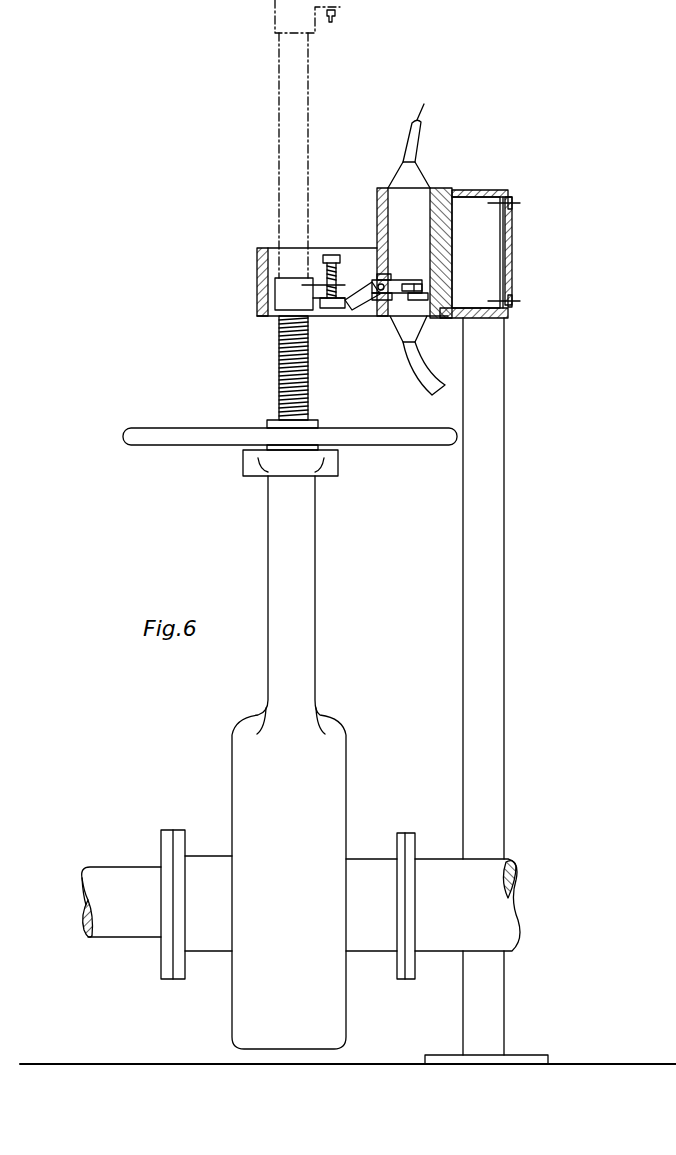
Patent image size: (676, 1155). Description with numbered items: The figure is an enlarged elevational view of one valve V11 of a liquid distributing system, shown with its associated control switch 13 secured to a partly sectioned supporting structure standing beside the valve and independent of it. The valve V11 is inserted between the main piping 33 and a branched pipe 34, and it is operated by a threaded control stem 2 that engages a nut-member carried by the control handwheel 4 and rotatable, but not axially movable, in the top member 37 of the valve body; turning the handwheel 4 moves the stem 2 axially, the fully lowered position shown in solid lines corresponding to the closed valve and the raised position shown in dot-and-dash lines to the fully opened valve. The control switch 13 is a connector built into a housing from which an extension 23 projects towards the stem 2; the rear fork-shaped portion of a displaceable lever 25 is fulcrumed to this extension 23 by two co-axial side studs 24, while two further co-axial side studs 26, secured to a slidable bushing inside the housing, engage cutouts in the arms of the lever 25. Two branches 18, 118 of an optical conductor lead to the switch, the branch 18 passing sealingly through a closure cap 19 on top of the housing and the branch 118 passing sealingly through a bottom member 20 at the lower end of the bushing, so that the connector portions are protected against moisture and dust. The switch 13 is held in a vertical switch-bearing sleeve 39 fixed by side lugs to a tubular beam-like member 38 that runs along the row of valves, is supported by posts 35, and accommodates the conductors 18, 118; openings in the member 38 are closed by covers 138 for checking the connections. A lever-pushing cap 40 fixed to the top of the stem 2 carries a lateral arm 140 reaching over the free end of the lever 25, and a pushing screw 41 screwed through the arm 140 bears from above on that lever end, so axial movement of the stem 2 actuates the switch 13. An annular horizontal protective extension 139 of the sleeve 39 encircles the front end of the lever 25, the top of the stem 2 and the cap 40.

The threaded control stem 2 is at (279, 91).
The control handwheel 4 is at (172, 443).
The control switch 13 is at (395, 196).
The branch of the conductor 18 is at (420, 124).
The closure cap 19 is at (398, 180).
The bottom member 20 is at (400, 330).
The extension 23 is at (379, 300).
The side studs 24 is at (382, 274).
The displaceable lever 25 is at (402, 280).
The side studs 26 is at (430, 288).
The main piping 33 is at (438, 866).
The branched pipes 34 is at (115, 934).
The post 35 is at (505, 664).
The top member 37 is at (325, 470).
The beam-like member 38 is at (485, 190).
The switch-bearing sleeve 39 is at (440, 188).
The lever-pushing cap 40 is at (282, 296).
The pushing screw 41 is at (323, 258).
The branch of the conductor 118 is at (433, 381).
The covers 138 is at (513, 206).
The protective extension 139 is at (257, 262).
The lateral arm 140 is at (338, 308).
The valve V11 is at (232, 752).